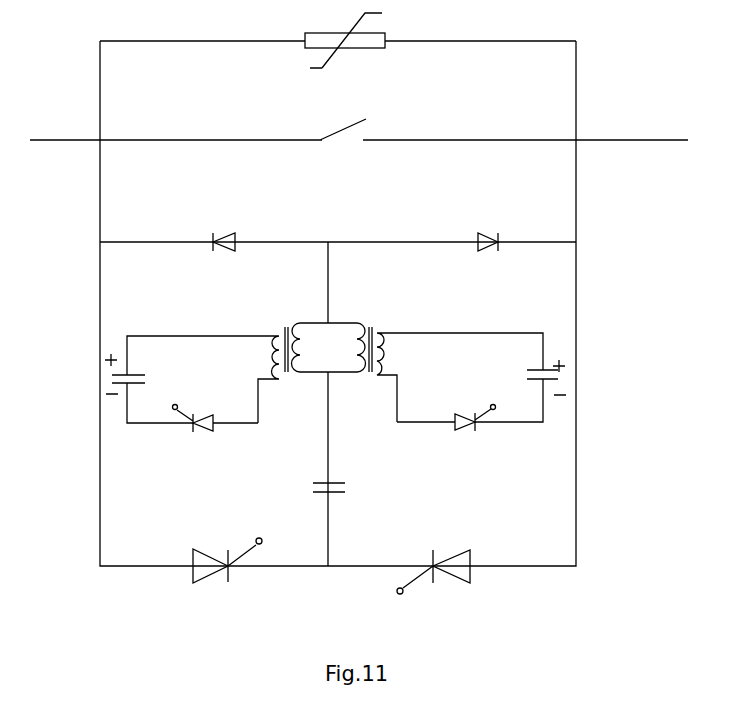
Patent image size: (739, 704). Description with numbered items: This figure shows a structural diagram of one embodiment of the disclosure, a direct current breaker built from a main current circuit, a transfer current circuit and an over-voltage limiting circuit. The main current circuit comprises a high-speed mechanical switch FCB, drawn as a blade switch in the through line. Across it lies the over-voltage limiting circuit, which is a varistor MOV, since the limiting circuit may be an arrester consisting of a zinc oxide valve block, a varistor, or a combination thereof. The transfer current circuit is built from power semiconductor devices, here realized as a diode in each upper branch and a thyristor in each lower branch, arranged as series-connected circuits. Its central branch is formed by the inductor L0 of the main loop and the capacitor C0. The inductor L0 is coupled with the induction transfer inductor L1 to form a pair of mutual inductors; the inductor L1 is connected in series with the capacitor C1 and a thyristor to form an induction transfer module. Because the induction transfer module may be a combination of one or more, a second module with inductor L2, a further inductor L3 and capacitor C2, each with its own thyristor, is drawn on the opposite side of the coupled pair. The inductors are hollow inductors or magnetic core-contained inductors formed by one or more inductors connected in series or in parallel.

The varistor MOV is at (355, 49).
The high-speed mechanical switch FCB is at (359, 144).
The power semiconductor device diode is at (357, 226).
The inductor of the main loop L0 is at (305, 333).
The induction transfer inductor L1 is at (351, 333).
The inductor L2 is at (259, 379).
The inductor L3 is at (395, 377).
The capacitor C0 is at (312, 491).
The capacitor C1 is at (481, 377).
The capacitor C2 is at (181, 379).
The element thyristor is at (334, 486).